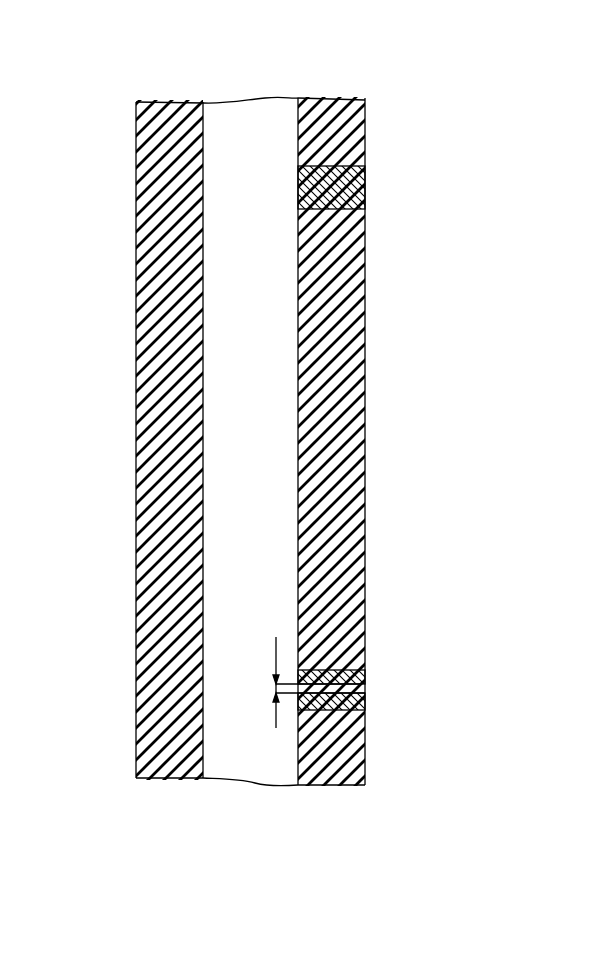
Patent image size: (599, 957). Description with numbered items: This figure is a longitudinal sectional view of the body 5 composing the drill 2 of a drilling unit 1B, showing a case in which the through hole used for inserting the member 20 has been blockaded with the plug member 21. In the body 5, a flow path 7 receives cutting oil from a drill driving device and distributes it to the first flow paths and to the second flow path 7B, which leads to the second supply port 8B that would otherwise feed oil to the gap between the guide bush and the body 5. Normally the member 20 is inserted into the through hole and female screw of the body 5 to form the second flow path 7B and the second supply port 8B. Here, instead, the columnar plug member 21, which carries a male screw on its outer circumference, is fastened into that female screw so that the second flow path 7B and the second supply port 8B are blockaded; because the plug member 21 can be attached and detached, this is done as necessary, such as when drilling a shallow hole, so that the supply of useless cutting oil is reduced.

The heat exchanger / tube assembly 1B is at (125, 90).
The drill 2 is at (130, 188).
The body 5 is at (135, 487).
The flow path 7 is at (285, 352).
The second flow path 7B is at (341, 684).
The member 20 is at (345, 686).
The plug member 21 is at (365, 178).
The second supply port 8B is at (364, 689).